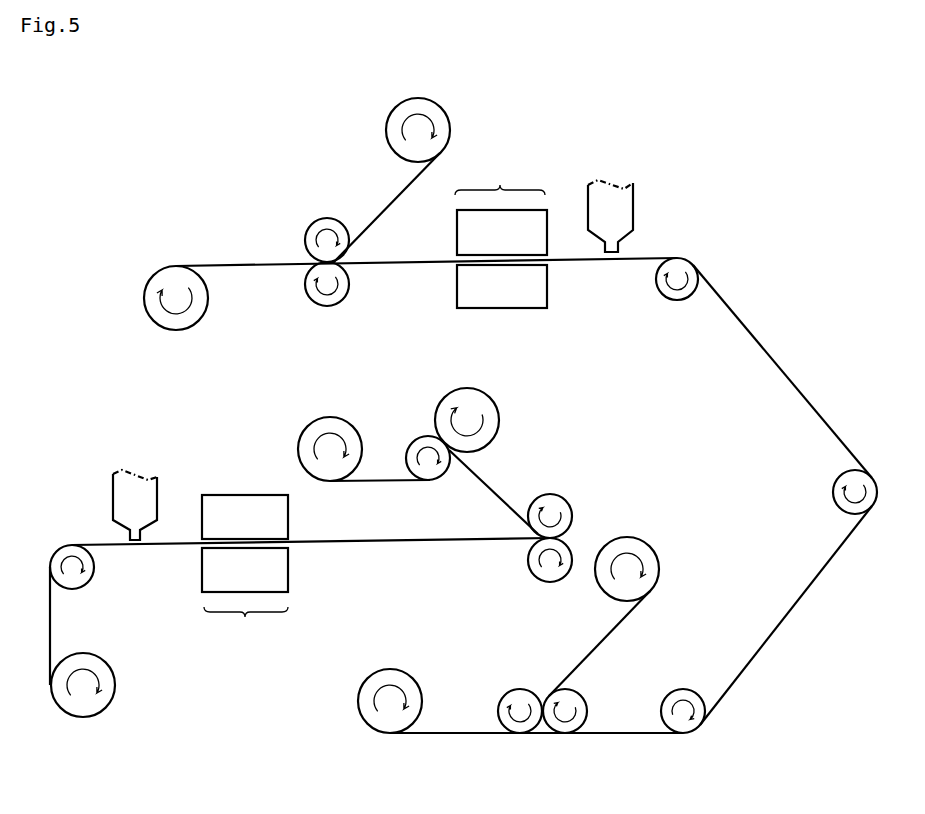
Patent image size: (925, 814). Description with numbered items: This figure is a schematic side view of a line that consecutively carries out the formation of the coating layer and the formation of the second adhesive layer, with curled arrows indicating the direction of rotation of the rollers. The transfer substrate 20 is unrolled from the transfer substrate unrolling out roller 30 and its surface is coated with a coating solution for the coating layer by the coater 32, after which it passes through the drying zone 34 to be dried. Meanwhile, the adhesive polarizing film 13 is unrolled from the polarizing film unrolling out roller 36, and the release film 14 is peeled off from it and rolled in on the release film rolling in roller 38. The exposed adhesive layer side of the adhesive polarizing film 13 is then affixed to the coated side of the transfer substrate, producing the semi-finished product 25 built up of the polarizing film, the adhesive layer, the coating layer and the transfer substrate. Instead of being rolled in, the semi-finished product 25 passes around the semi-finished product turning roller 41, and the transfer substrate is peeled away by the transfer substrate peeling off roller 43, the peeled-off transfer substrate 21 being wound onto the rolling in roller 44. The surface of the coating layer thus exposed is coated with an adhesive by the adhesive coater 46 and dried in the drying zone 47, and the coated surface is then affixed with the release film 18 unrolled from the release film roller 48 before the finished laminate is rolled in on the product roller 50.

The adhesive polarizing film 13 is at (490, 483).
The release film 14 is at (383, 480).
The release film 18 is at (393, 198).
The transfer substrate 20 is at (52, 632).
The peeled-off transfer substrate 21 is at (455, 733).
The semi-finished product 25 is at (613, 637).
The transfer substrate unrolling out roller 30 is at (107, 685).
The coater 32 is at (123, 497).
The drying zone 34 is at (245, 576).
The polarizing film unrolling out roller 36 is at (490, 425).
The release film rolling in roller 38 is at (308, 432).
The semi-finished product turning roller 41 is at (620, 585).
The transfer substrate peeling off roller 43 is at (508, 700).
The rolling in roller 44 is at (365, 683).
The adhesive coater 46 is at (617, 213).
The drying zone 47 is at (501, 230).
The release film roller 48 is at (397, 120).
The product roller 50 is at (158, 318).